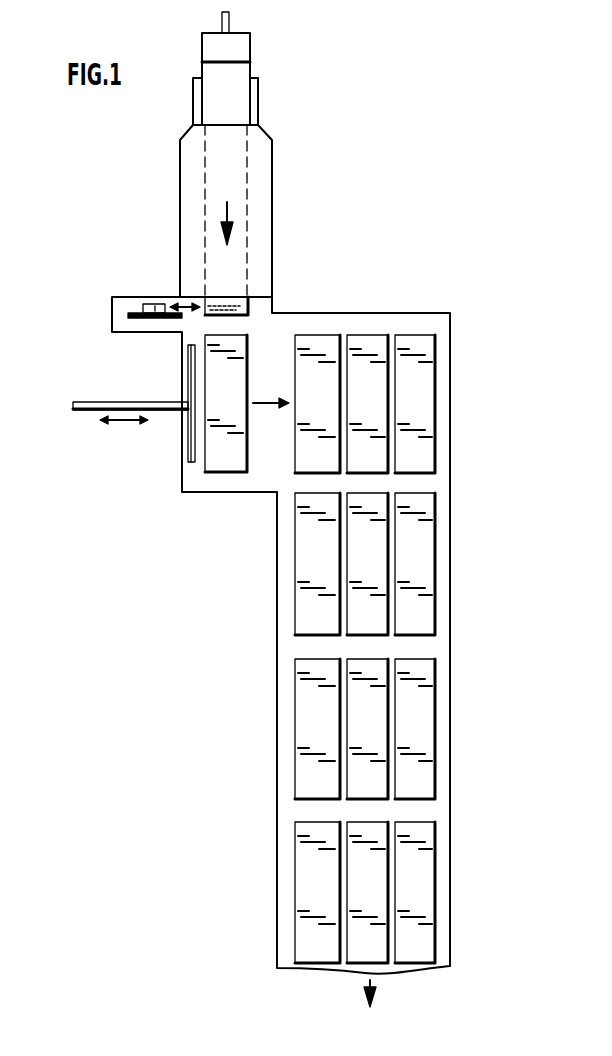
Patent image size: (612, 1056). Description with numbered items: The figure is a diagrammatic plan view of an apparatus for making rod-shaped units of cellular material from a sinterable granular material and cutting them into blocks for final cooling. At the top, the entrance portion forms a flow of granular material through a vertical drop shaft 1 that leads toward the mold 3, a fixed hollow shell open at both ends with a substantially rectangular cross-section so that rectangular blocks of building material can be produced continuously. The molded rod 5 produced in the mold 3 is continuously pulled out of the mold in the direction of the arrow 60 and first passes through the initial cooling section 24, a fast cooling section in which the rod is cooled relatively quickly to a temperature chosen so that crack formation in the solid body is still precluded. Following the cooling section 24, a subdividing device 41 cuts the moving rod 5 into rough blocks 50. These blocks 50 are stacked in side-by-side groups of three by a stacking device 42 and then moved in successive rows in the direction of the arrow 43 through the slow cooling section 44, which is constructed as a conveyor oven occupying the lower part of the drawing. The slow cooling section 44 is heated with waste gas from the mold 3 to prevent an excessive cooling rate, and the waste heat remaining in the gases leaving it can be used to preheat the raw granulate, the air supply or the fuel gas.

The vertical drop shaft 1 is at (238, 50).
The mold 3 is at (238, 97).
The initial cooling section 24 is at (262, 182).
The arrow 60 is at (227, 207).
The molded rod 5 is at (238, 306).
The subdividing device 41 is at (128, 316).
The stacking device 42 is at (80, 411).
The rough blocks 50 is at (220, 458).
The slow cooling section 44 is at (440, 483).
The arrow 43 is at (370, 980).